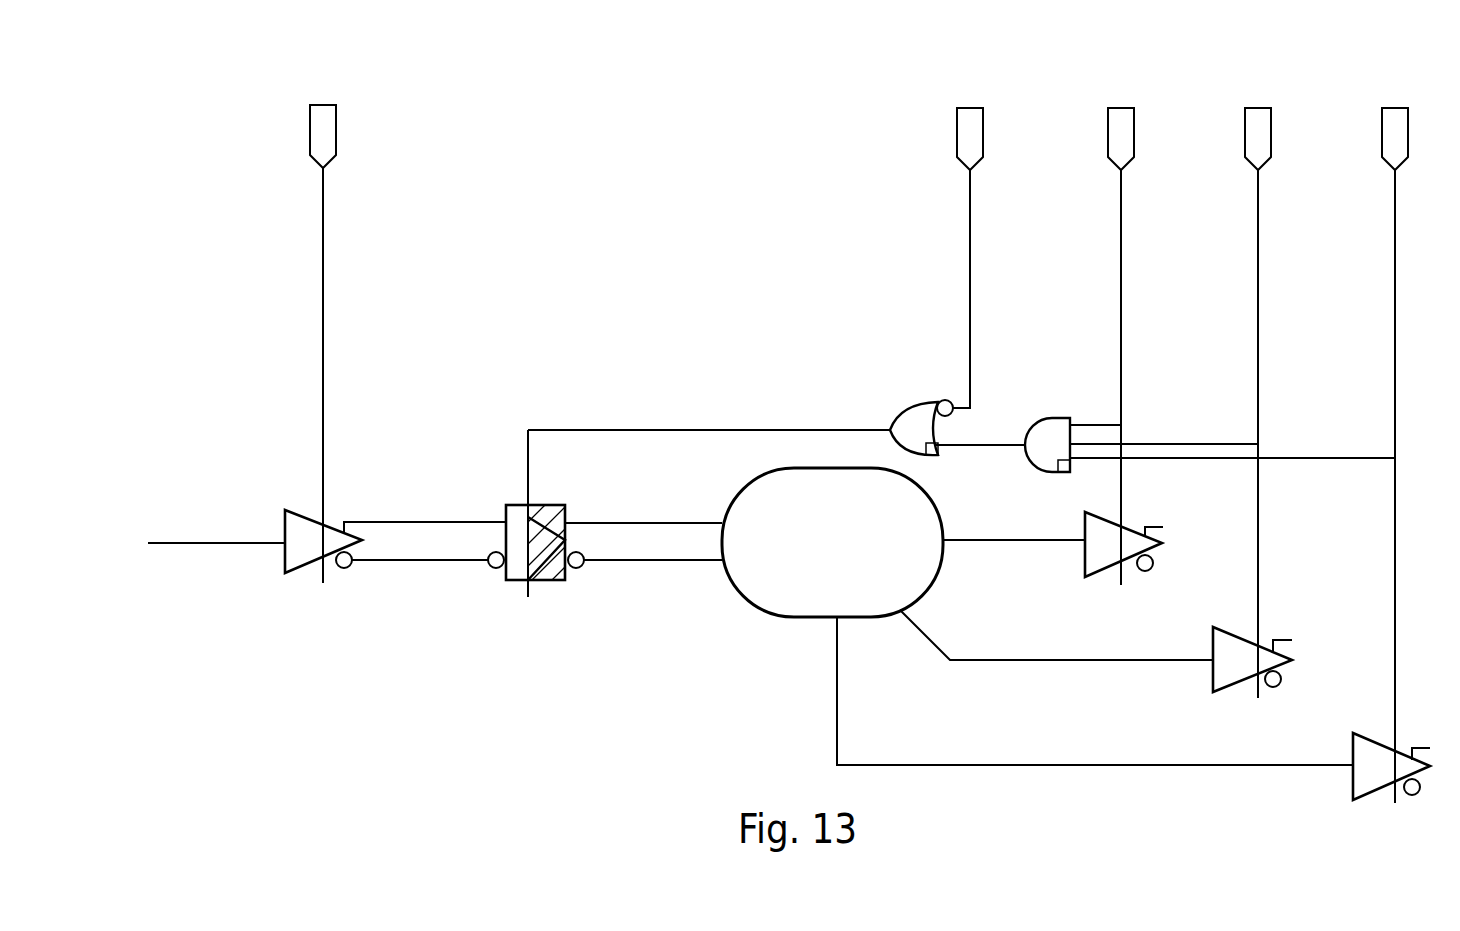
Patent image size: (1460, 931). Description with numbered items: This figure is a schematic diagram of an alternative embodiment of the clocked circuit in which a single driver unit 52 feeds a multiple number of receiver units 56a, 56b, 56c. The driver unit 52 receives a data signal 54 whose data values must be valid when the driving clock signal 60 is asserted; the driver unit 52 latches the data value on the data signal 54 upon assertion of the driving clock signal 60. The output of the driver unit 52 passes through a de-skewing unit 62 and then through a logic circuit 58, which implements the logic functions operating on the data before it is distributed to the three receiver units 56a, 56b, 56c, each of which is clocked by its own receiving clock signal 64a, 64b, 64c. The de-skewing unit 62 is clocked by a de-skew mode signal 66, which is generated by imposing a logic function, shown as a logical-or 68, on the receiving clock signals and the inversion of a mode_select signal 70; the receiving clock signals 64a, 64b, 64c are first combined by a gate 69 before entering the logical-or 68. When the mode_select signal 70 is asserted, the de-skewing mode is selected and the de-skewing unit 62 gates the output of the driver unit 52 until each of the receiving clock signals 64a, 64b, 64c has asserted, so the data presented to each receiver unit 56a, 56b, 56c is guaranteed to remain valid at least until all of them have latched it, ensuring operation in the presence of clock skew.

The driver unit 52 is at (292, 510).
The data signal 54 is at (192, 544).
The receiver unit 56a is at (1086, 525).
The receiver unit 56b is at (1213, 640).
The receiver unit 56c is at (1354, 748).
The logic circuit 58 is at (832, 542).
The driving clock signal 60 is at (325, 330).
The de-skewing unit 62 is at (540, 505).
The receiving clock signal 64a is at (1124, 390).
The receiving clock signal 64b is at (1261, 390).
The receiving clock signal 64c is at (1398, 390).
The de-skew mode signal 66 is at (783, 430).
The logical-or 68 is at (922, 402).
The AND gate 69 is at (1053, 418).
The mode_select signal 70 is at (970, 320).